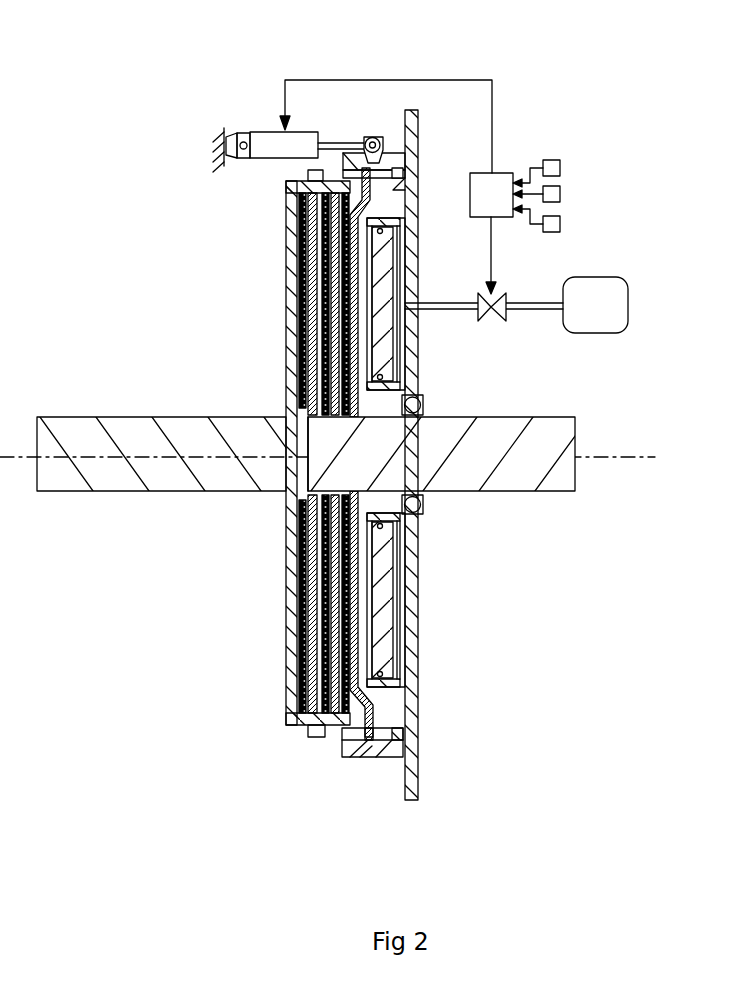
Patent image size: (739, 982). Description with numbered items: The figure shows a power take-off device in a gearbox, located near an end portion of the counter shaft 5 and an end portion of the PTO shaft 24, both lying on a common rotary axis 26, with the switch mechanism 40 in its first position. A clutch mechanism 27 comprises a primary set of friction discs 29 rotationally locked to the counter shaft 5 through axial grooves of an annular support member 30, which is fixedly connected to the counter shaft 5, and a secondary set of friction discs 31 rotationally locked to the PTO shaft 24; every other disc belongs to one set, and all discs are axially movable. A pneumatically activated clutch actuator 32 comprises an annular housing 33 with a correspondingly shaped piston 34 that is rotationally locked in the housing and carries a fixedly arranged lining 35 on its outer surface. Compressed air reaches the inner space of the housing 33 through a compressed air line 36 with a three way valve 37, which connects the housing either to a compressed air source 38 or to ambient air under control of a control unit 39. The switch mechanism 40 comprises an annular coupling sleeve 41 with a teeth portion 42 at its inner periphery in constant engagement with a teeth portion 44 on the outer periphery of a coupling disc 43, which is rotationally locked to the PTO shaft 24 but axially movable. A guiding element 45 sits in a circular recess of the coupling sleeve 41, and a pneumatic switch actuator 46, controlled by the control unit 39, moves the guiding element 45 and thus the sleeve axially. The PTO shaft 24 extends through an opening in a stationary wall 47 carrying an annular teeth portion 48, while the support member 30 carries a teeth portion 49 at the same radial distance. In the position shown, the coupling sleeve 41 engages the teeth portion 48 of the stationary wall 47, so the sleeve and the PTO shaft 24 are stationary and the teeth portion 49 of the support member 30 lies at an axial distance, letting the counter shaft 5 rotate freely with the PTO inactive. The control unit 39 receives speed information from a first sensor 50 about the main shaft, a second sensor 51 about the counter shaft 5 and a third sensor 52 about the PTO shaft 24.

The counter shaft 5 is at (113, 468).
The PTO shaft 24 is at (511, 468).
The common rotary axis 26 is at (593, 452).
The clutch mechanism 27 is at (261, 459).
The primary set of friction discs 29 is at (326, 235).
The annular support member 30 is at (290, 545).
The secondary set of friction discs 31 is at (312, 417).
The clutch actuator 32 is at (392, 600).
The annular housing 33 is at (417, 301).
The piston 34 is at (383, 325).
The lining 35 is at (368, 353).
The compressed air line 36 is at (447, 301).
The three way valve 37 is at (493, 310).
The compressed air source 38 is at (604, 290).
The control unit 39 is at (493, 188).
The switch mechanism 40 is at (398, 88).
The annular coupling sleeve 41 is at (393, 745).
The teeth portion 42 is at (382, 735).
The coupling disc 43 is at (352, 635).
The teeth portion 44 is at (367, 737).
The guiding element 45 is at (370, 137).
The pneumatic switch actuator 46 is at (270, 140).
The stationary wall 47 is at (413, 130).
The annular teeth portion 48 is at (398, 173).
The teeth portion 49 is at (306, 175).
The first sensor 50 is at (550, 166).
The second sensor 51 is at (560, 195).
The third sensor 52 is at (550, 227).